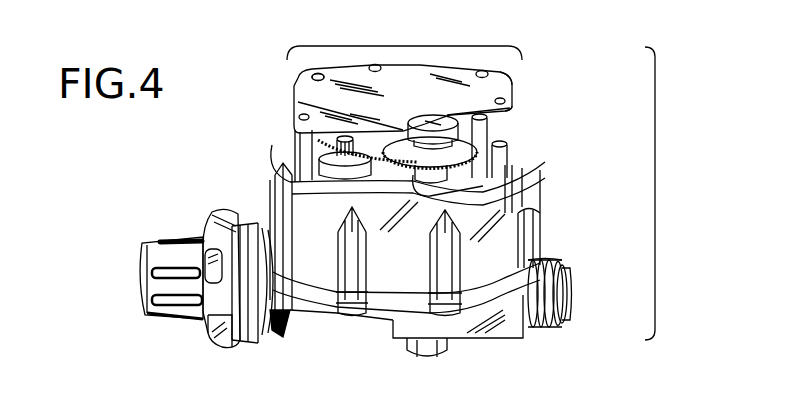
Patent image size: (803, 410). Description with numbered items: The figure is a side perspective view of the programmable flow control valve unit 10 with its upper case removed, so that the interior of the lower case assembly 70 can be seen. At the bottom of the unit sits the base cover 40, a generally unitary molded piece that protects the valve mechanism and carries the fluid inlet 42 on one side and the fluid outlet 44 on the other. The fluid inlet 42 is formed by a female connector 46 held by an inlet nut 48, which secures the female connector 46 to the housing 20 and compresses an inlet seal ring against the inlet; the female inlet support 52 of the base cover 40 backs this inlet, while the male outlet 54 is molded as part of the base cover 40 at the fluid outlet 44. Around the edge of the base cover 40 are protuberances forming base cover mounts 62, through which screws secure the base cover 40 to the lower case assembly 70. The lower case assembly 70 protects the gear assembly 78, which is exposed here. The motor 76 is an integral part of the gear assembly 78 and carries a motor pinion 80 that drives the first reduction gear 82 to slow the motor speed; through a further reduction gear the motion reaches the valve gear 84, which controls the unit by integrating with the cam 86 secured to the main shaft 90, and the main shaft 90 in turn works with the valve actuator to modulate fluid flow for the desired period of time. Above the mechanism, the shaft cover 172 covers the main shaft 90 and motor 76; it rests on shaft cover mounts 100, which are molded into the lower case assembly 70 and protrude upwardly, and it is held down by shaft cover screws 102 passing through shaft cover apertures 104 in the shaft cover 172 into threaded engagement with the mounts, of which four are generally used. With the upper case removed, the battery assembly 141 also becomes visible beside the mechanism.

The programmable flow control valve unit 10 is at (673, 82).
The housing 20 is at (656, 143).
The base cover 40 is at (507, 327).
The fluid inlet 42 is at (126, 285).
The fluid outlet 44 is at (588, 285).
The female connector 46 is at (188, 327).
The inlet nut 48 is at (231, 343).
The female inlet support 52 is at (268, 335).
The male outlet 54 is at (572, 262).
The base cover mounts 62 is at (360, 312).
The lower case assembly 70 is at (512, 212).
The motor 76 is at (292, 190).
The gear assembly 78 is at (408, 45).
The motor pinion 80 is at (292, 148).
The first reduction gear 82 is at (293, 129).
The valve gear 84 is at (478, 128).
The cam 86 is at (458, 124).
The main shaft 90 is at (490, 178).
The shaft cover mounts 100 is at (500, 108).
The shaft cover screws 102 is at (505, 72).
The shaft cover apertures 104 is at (505, 86).
The battery assembly 141 is at (490, 198).
The shaft cover 172 is at (295, 108).